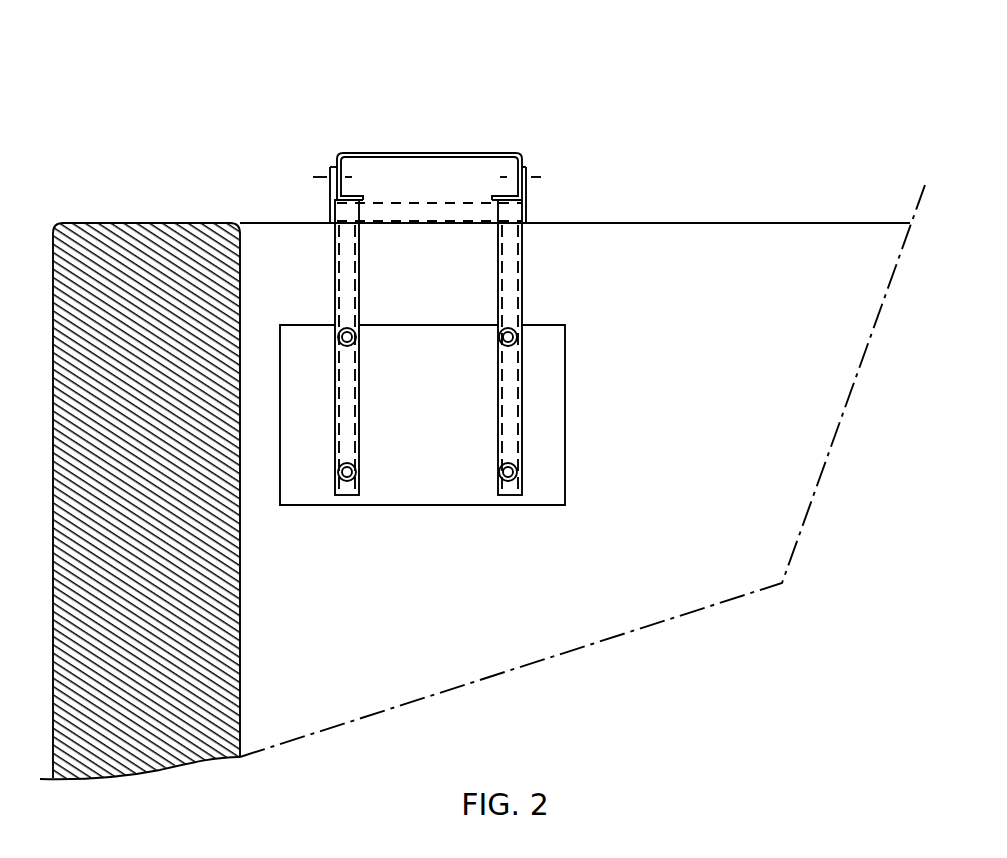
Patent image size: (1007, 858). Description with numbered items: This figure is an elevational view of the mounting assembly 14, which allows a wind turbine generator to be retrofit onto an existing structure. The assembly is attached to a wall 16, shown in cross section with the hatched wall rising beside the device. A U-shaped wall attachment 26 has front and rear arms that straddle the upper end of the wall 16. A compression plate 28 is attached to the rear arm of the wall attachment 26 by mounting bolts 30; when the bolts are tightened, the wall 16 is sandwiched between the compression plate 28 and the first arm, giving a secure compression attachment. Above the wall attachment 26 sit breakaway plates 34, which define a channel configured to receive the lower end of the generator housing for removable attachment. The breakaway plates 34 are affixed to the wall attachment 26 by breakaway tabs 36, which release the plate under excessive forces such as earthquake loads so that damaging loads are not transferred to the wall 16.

The mounting assembly 14 is at (279, 78).
The wall 16 is at (178, 222).
The U-shaped wall attachment 26 is at (522, 352).
The compression plate 28 is at (405, 485).
The mounting bolts 30 is at (515, 467).
The breakaway plates 34 is at (477, 153).
The breakaway tabs 36 is at (530, 202).